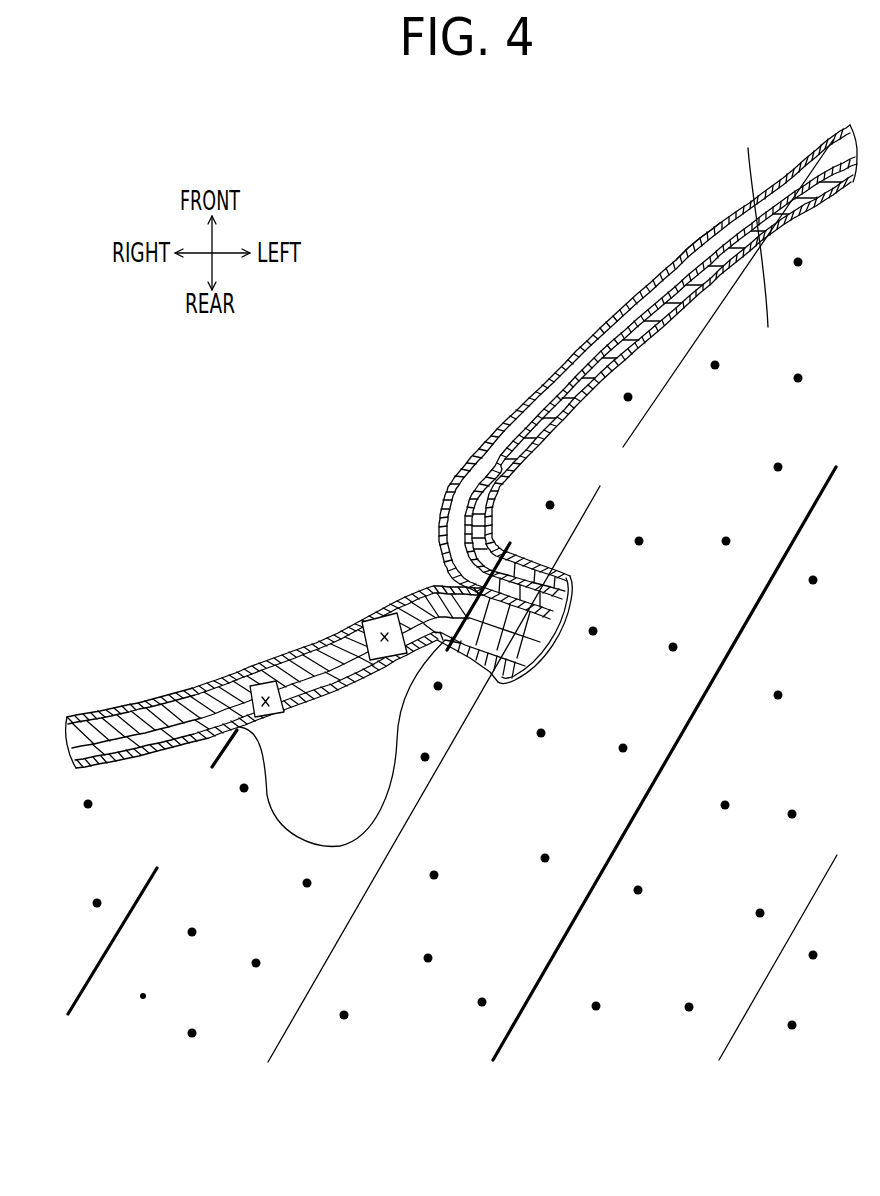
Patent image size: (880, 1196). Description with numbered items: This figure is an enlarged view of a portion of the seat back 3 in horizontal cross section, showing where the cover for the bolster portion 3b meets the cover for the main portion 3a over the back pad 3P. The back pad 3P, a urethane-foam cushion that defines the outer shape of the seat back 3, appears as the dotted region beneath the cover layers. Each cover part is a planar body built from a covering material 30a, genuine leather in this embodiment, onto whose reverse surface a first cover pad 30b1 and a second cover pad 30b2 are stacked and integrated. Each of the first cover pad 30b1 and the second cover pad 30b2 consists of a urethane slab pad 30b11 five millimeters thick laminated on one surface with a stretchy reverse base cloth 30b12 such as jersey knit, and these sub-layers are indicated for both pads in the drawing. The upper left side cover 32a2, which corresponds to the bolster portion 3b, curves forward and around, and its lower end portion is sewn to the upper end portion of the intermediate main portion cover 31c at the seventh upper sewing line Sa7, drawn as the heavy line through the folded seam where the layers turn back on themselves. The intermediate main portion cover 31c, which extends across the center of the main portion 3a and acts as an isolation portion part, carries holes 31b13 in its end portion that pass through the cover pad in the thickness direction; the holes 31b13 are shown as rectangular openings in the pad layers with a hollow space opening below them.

The seat back 3 is at (328, 412).
The back pad 3P is at (750, 223).
The main portion 3a is at (103, 717).
The bolster portion 3b is at (625, 304).
The covering material 30a is at (495, 430).
The first cover pad 30b1 is at (432, 274).
The urethane slab pad 30b11 is at (527, 426).
The reverse base cloth 30b12 is at (575, 398).
The second cover pad 30b2 is at (573, 484).
The intermediate main portion cover 31c is at (137, 710).
The hole 31b13 is at (386, 643).
The upper left side cover 32a2 is at (712, 229).
The seventh upper sewing line Sa7 is at (457, 658).